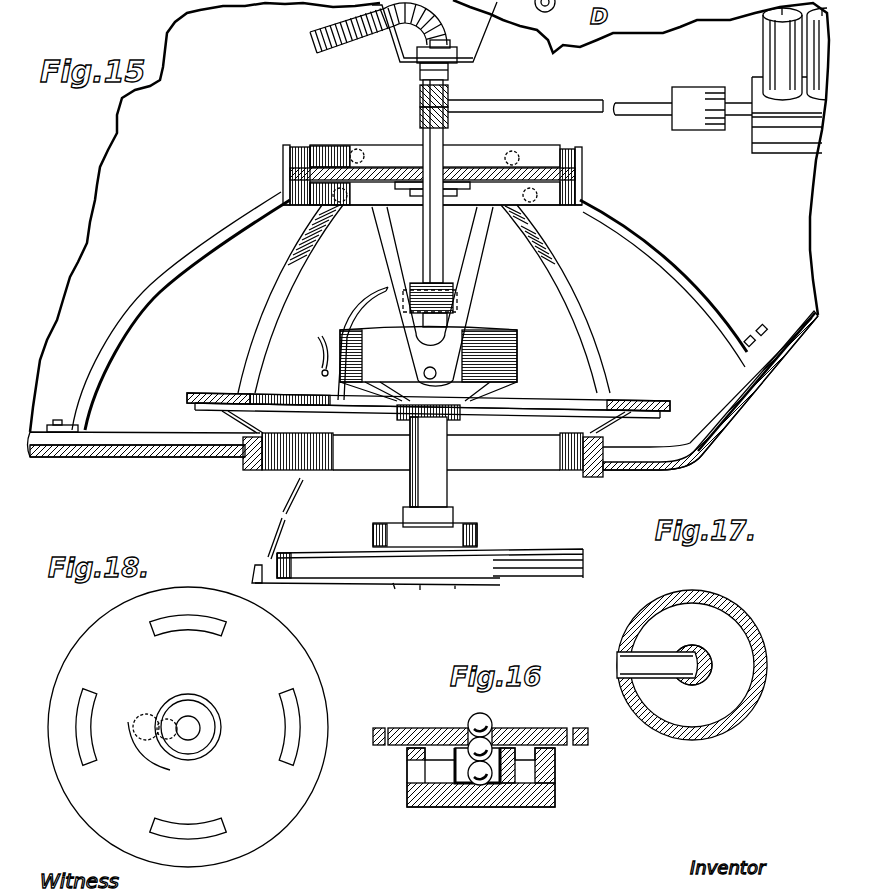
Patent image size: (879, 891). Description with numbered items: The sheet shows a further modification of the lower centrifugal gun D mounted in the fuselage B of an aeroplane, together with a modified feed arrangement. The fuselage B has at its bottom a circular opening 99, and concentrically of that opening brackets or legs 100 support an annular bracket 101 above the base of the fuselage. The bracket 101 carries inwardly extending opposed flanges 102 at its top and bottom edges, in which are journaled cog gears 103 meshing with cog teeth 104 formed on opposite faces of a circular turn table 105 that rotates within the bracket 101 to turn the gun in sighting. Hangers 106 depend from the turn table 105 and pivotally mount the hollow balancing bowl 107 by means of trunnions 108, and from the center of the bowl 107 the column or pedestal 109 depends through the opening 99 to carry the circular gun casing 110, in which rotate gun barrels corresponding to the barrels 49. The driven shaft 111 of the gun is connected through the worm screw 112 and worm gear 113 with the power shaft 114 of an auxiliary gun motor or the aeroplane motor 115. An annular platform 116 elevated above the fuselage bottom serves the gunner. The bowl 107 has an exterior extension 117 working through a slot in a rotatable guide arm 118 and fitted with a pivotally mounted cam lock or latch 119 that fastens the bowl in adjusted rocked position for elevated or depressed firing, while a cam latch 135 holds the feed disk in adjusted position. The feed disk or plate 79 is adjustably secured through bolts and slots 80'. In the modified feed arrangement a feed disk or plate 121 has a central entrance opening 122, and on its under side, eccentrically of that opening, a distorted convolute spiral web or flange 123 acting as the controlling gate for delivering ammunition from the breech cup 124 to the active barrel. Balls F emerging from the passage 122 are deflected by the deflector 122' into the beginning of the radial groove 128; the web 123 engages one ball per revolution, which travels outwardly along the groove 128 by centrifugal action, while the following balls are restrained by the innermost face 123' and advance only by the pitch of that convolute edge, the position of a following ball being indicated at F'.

In FIG. 15, the brackets or legs 100 is at (300, 236).
In FIG. 15, the annular bracket 101 is at (585, 178).
In FIG. 15, the inwardly extending opposed flanges 102 is at (297, 143).
In FIG. 15, the cog gears 103 is at (284, 168).
In FIG. 15, the cog teeth 104 is at (283, 185).
In FIG. 15, the circular turn table 105 is at (328, 145).
In FIG. 15, the hangers 106 is at (492, 246).
In FIG. 15, the hollow balancing bowl 107 is at (512, 355).
In FIG. 15, the trunnions 108 is at (424, 373).
In FIG. 15, the column or pedestal 109 is at (450, 490).
In FIG. 15, the circular gun casing 110 is at (462, 570).
In FIG. 15, the driven shaft 111 is at (425, 140).
In FIG. 15, the worm screw 112 is at (450, 85).
In FIG. 15, the worm gear 113 is at (452, 97).
In FIG. 15, the power shaft 114 is at (586, 100).
In FIG. 15, the aeroplane motor 115 is at (752, 150).
In FIG. 15, the annular platform 116 is at (636, 399).
In FIG. 15, the extension 117 is at (340, 340).
In FIG. 15, the rotatable guide arm 118 is at (368, 306).
In FIG. 15, the cam lock or latch 119 is at (320, 374).
In FIG. 16, the feed disk or plate 121 is at (513, 732).
In FIG. 18, the feed disk or plate 121 is at (68, 770).
In FIG. 16, the central entrance opening 122 is at (450, 719).
In FIG. 18, the central entrance opening 122 is at (199, 763).
In FIG. 16, the deflector 122' is at (457, 822).
In FIG. 17, the deflector 122' is at (725, 696).
In FIG. 16, the distorted spiral web or flange 123 is at (485, 804).
In FIG. 18, the distorted spiral web or flange 123 is at (200, 735).
In FIG. 18, the innermost face 123' is at (218, 708).
In FIG. 16, the breech cup 124 is at (430, 808).
In FIG. 17, the breech cup 124 is at (696, 734).
In FIG. 16, the radial groove 128 is at (412, 772).
In FIG. 17, the radial groove 128 is at (657, 668).
In FIG. 15, the cam latch 135 is at (270, 545).
In FIG. 15, the circular opening 99 is at (293, 480).
In FIG. 15, the feed disk or plate 79 is at (422, 585).
In FIG. 15, the gun barrels 49 is at (552, 566).
In FIG. 15, the slots 80' is at (246, 573).
In FIG. 18, the slots 80' is at (189, 711).
In FIG. 15, the fuselage B is at (185, 460).
In FIG. 15, the lower centrifugal gun D is at (395, 586).
In FIG. 16, the balls F is at (487, 729).
In FIG. 18, the ball position F' is at (149, 715).